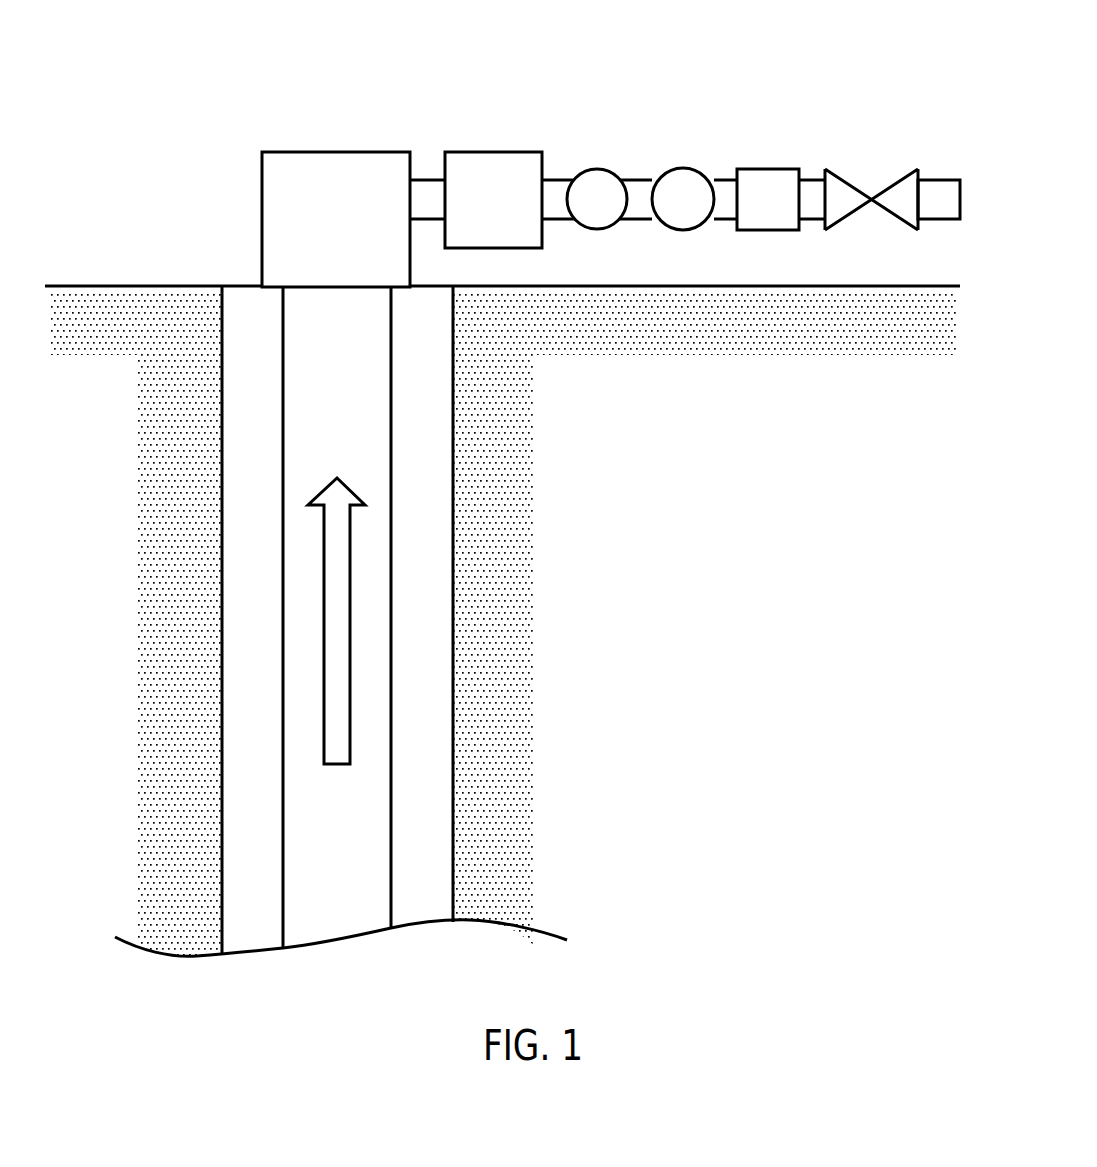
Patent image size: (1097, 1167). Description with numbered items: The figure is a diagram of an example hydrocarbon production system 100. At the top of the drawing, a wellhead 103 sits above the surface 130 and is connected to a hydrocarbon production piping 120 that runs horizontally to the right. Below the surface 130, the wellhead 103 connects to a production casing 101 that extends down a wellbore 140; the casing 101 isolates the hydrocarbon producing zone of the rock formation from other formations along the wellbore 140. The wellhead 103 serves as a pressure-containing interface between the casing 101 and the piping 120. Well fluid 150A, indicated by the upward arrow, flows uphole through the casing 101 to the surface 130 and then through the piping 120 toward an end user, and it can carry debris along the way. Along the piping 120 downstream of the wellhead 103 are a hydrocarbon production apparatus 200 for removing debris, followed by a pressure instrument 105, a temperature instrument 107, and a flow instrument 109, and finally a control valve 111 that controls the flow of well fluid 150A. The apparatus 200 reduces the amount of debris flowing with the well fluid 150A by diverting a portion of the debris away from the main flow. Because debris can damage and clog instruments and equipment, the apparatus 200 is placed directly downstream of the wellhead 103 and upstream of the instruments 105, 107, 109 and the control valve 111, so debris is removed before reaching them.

The hydrocarbon production system 100 is at (758, 885).
The production casing 101 is at (391, 598).
The wellhead 103 is at (335, 152).
The pressure instrument 105 is at (590, 168).
The temperature instrument 107 is at (680, 168).
The flow instrument 109 is at (767, 169).
The control valve 111 is at (836, 170).
The hydrocarbon production piping 120 is at (432, 180).
The surface 130 is at (115, 286).
The wellbore 140 is at (453, 483).
The well fluid 150A is at (348, 706).
The hydrocarbon production apparatus 200 is at (488, 152).